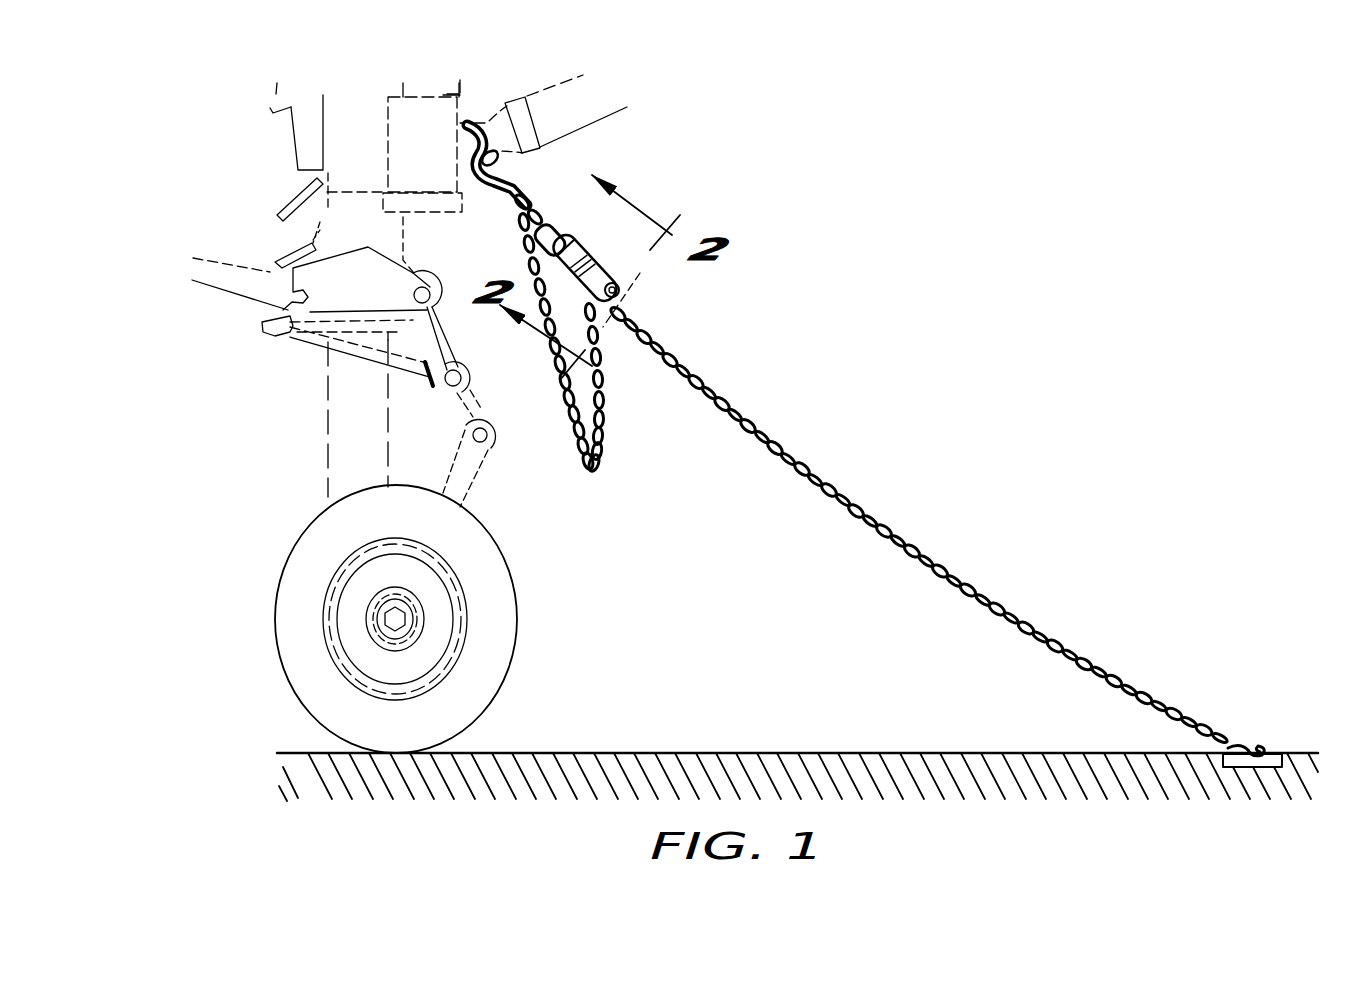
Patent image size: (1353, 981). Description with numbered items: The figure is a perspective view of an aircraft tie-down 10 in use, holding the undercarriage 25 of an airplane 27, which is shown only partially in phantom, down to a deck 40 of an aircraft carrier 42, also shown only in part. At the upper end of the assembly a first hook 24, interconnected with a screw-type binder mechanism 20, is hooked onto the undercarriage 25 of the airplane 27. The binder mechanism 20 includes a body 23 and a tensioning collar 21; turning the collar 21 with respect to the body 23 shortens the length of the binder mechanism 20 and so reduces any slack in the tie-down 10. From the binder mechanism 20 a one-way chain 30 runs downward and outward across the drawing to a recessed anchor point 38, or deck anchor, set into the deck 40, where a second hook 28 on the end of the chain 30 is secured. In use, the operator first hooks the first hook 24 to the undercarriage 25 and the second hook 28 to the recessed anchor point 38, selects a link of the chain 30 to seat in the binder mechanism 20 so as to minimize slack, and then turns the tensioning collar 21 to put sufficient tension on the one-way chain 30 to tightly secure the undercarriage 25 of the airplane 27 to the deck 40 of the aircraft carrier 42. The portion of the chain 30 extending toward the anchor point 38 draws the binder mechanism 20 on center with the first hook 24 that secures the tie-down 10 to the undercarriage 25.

The aircraft tie-down 10 is at (770, 412).
The screw-type binder mechanism 20 is at (616, 262).
The tensioning collar 21 is at (558, 227).
The body 23 is at (575, 230).
The first hook 24 is at (475, 183).
The undercarriage 25 is at (298, 160).
The airplane 27 is at (283, 117).
The second hook 28 is at (1238, 745).
The one-way chain 30 is at (842, 484).
The recessed anchor point 38 is at (1270, 745).
The deck 40 is at (840, 750).
The aircraft carrier 42 is at (772, 746).